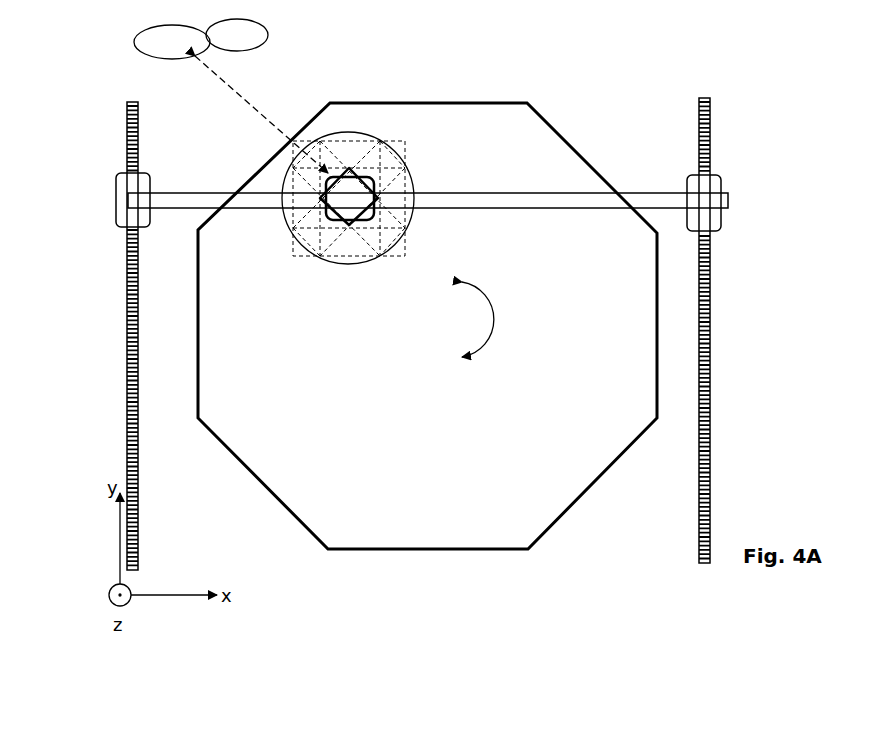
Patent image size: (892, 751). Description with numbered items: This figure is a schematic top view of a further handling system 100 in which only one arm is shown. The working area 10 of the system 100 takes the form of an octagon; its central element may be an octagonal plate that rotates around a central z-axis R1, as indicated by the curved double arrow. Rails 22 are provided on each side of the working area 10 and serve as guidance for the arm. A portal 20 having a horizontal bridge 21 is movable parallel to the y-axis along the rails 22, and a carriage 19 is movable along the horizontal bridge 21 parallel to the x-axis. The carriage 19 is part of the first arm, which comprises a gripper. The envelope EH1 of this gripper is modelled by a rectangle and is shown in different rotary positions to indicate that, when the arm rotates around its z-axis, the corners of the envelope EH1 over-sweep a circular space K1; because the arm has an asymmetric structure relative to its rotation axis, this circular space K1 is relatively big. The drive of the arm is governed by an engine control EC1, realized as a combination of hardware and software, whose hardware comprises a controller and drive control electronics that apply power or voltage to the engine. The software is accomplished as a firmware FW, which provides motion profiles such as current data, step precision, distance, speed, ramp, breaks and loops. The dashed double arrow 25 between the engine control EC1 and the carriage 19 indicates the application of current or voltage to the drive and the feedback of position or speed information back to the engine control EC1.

The handling system 100 is at (655, 105).
The working area 10 is at (438, 115).
The carriage 19 is at (347, 188).
The portal 20 is at (100, 170).
The horizontal bridge 21 is at (483, 193).
The rails 22 is at (138, 488).
The dashed double arrow 25 is at (243, 102).
The engine control EC1 is at (189, 51).
The firmware FW is at (237, 35).
The envelope EH1 is at (290, 228).
The circular space K1 is at (403, 243).
The central z-axis R1 is at (460, 319).